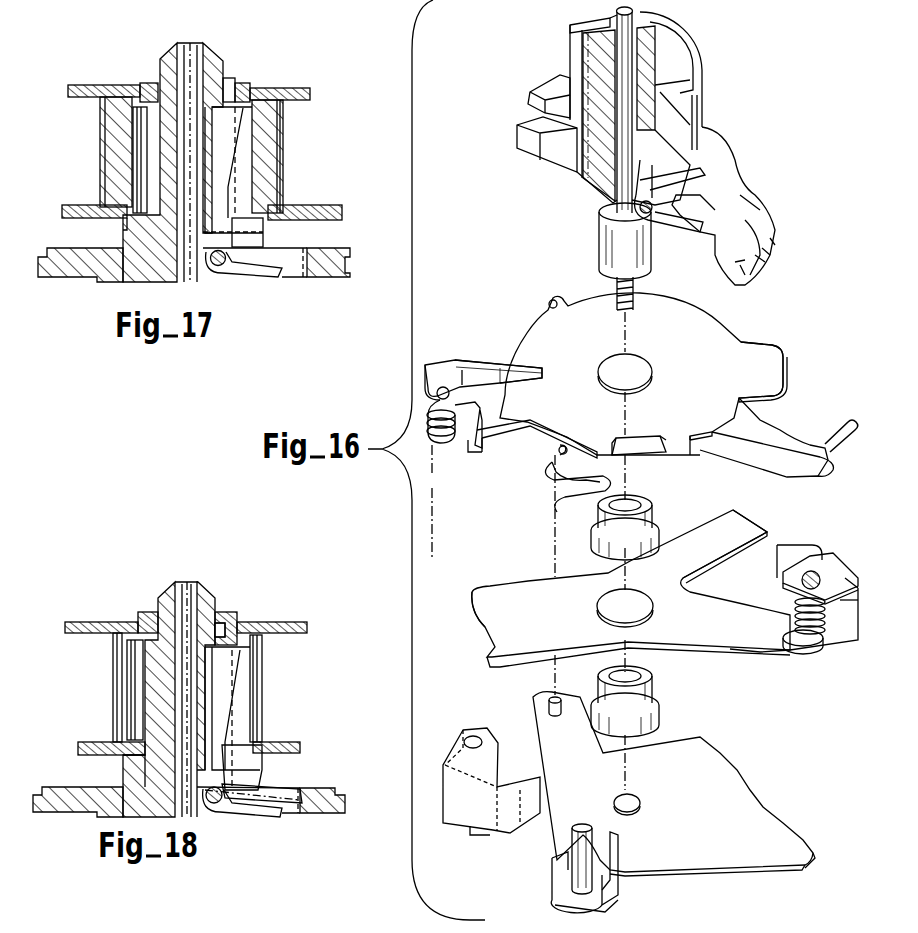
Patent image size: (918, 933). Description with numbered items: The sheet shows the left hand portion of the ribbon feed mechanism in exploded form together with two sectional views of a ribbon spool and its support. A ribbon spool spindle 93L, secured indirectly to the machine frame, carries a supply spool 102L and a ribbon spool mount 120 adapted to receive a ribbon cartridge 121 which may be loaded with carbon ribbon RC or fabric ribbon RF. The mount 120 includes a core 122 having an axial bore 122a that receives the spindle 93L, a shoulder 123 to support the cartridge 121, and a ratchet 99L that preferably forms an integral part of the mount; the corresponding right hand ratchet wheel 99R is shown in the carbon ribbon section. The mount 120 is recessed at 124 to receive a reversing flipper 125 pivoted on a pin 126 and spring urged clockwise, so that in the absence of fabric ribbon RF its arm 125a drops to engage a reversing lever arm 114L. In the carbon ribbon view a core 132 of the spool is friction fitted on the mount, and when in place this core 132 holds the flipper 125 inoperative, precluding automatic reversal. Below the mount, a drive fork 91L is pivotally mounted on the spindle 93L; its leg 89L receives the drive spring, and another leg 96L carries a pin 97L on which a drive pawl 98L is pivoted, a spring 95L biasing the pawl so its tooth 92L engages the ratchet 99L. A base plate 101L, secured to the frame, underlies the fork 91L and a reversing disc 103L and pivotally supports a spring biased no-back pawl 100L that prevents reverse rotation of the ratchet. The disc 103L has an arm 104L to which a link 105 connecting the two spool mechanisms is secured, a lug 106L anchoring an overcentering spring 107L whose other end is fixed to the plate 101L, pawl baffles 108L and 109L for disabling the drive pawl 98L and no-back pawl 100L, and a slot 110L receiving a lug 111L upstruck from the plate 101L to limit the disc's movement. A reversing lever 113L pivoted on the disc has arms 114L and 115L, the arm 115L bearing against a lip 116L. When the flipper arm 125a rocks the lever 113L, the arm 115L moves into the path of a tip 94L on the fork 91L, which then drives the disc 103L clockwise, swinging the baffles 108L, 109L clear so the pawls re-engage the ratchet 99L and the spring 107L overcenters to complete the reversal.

In FIG. 17, the ribbon cartridge 121 is at (88, 82).
In FIG. 18, the ribbon cartridge 121 is at (80, 618).
In FIG. 17, the core 122 is at (160, 80).
In FIG. 18, the core 122 is at (168, 602).
In FIG. 18, the axial bore 122a is at (187, 582).
In FIG. 17, the ribbon spool mount 120 is at (232, 80).
In FIG. 18, the ribbon spool mount 120 is at (225, 605).
In FIG. 17, the core 132 is at (112, 158).
In FIG. 17, the carbon ribbon RC is at (284, 162).
In FIG. 18, the fabric ribbon RF is at (118, 702).
In FIG. 18, the shoulder 123 is at (130, 760).
In FIG. 18, the recess 124 is at (252, 650).
In FIG. 17, the reversing flipper 125 is at (265, 233).
In FIG. 18, the reversing flipper 125 is at (262, 780).
In FIG. 18, the flipper arm 125a is at (295, 792).
In FIG. 17, the pin 126 is at (222, 268).
In FIG. 18, the pin 126 is at (220, 805).
In FIG. 16, the pin 126 is at (662, 222).
In FIG. 17, the ratchet wheel 99R is at (330, 268).
In FIG. 18, the ratchet 99L is at (325, 805).
In FIG. 16, the ratchet 99L is at (735, 262).
In FIG. 16, the ribbon spool spindle 93L is at (617, 12).
In FIG. 16, the supply spool 102L is at (560, 27).
In FIG. 16, the reversing disc 103L is at (730, 325).
In FIG. 16, the pawl baffle 108L is at (770, 362).
In FIG. 16, the slot 110L is at (640, 437).
In FIG. 16, the pawl baffle 109L is at (655, 455).
In FIG. 16, the arm 104L is at (812, 413).
In FIG. 16, the link 105 is at (855, 392).
In FIG. 16, the reversing lever 113L is at (440, 370).
In FIG. 16, the lever arm 114L is at (480, 368).
In FIG. 16, the lip 116L is at (475, 445).
In FIG. 16, the lever arm 115L is at (490, 448).
In FIG. 16, the lug 106L is at (552, 462).
In FIG. 16, the overcentering spring 107L is at (563, 515).
In FIG. 16, the drive fork 91L is at (530, 582).
In FIG. 16, the fork leg 89L is at (742, 518).
In FIG. 16, the tip 94L is at (487, 660).
In FIG. 16, the pawl tooth 92L is at (788, 552).
In FIG. 16, the drive pawl 98L is at (850, 560).
In FIG. 16, the pin 97L is at (790, 588).
In FIG. 16, the spring 95L is at (807, 654).
In FIG. 16, the fork leg 96L is at (765, 648).
In FIG. 16, the base plate 101L is at (752, 855).
In FIG. 16, the no-back pawl 100L is at (480, 830).
In FIG. 16, the lug 111L is at (620, 852).